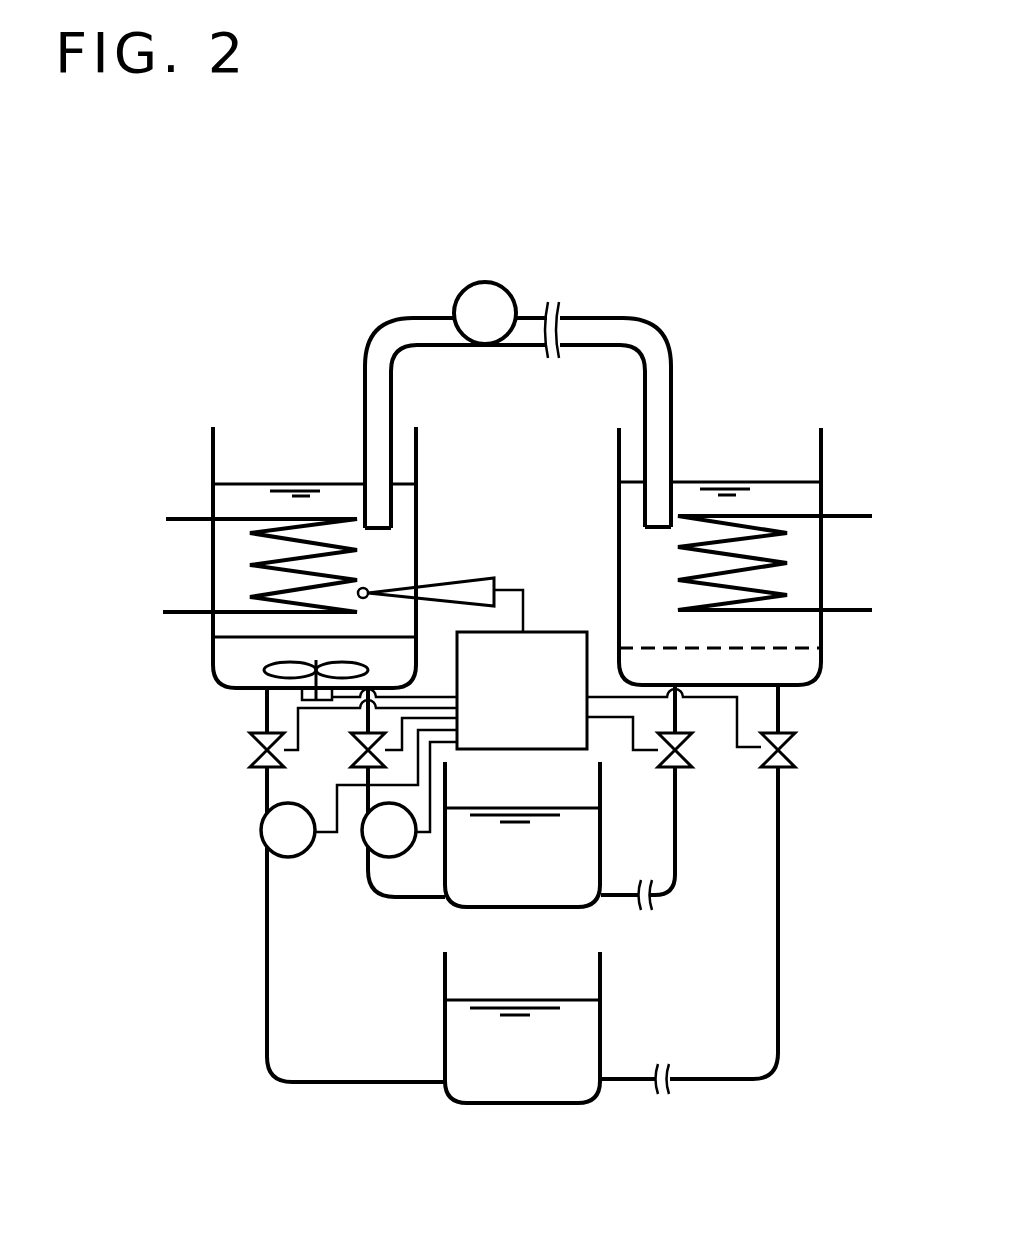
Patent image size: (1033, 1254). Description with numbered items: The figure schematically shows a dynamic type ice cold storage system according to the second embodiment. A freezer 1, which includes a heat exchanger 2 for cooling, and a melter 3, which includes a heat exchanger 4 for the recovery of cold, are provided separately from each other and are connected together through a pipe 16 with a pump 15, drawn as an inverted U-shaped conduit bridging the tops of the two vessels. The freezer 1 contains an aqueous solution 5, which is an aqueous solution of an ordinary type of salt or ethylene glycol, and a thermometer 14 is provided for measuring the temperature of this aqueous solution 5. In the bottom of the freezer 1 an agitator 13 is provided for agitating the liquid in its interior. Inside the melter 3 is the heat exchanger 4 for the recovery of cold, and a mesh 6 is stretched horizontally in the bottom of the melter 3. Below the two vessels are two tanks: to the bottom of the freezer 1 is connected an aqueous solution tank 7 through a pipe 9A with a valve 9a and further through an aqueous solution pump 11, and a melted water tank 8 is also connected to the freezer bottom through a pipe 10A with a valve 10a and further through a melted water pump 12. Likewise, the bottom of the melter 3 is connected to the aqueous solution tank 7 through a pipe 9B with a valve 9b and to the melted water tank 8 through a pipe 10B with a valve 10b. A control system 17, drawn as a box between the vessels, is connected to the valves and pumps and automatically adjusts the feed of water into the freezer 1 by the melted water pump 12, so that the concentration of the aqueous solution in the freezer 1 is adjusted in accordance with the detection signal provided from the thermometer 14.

The freezer 1 is at (215, 660).
The heat exchanger for cooling 2 is at (268, 530).
The melter 3 is at (821, 678).
The heat exchanger for the recovery of cold 4 is at (752, 525).
The aqueous solution 5 is at (278, 490).
The mesh 6 is at (770, 648).
The aqueous solution tank 7 is at (597, 905).
The melted water tank 8 is at (604, 1030).
The pipe 9A is at (372, 897).
The pipe 9B is at (676, 845).
The valve 9a is at (356, 744).
The valve 9b is at (690, 762).
The pipe 10A is at (266, 797).
The pipe 10B is at (779, 900).
The valve 10a is at (252, 748).
The valve 10b is at (794, 741).
The aqueous solution pump 11 is at (380, 840).
The melted water pump 12 is at (262, 838).
The agitator 13 is at (262, 670).
The thermometer 14 is at (468, 580).
The pump 15 is at (490, 300).
The pipe 16 is at (622, 318).
The control system 17 is at (567, 632).